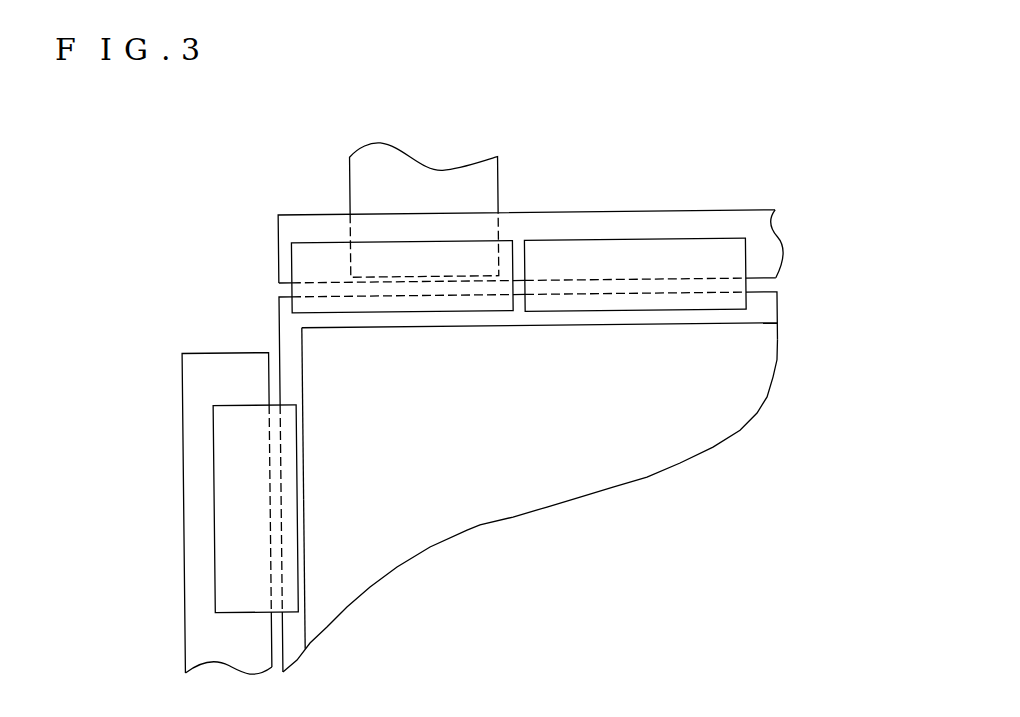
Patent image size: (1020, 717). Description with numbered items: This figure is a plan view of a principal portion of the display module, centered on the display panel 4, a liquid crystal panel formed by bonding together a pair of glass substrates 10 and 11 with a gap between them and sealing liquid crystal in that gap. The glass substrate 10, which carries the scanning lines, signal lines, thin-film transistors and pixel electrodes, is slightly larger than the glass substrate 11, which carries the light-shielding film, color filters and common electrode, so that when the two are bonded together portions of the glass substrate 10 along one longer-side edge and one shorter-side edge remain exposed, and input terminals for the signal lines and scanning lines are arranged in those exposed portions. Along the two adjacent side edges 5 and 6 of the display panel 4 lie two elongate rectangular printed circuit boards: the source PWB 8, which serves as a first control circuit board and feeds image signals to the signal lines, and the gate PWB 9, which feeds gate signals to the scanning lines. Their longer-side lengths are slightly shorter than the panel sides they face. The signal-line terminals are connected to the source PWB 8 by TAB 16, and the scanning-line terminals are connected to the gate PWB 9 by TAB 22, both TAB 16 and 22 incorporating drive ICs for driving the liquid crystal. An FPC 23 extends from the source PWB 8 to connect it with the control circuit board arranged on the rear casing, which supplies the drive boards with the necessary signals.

The display panel 4 is at (522, 458).
The side edge 5 is at (693, 322).
The side edge 6 is at (293, 623).
The source PWB 8 is at (590, 211).
The gate PWB 9 is at (214, 353).
The glass substrate 10 is at (278, 323).
The glass substrate 11 is at (305, 378).
The TAB 16 is at (513, 242).
The TAB 22 is at (213, 532).
The FPC 23 is at (426, 192).